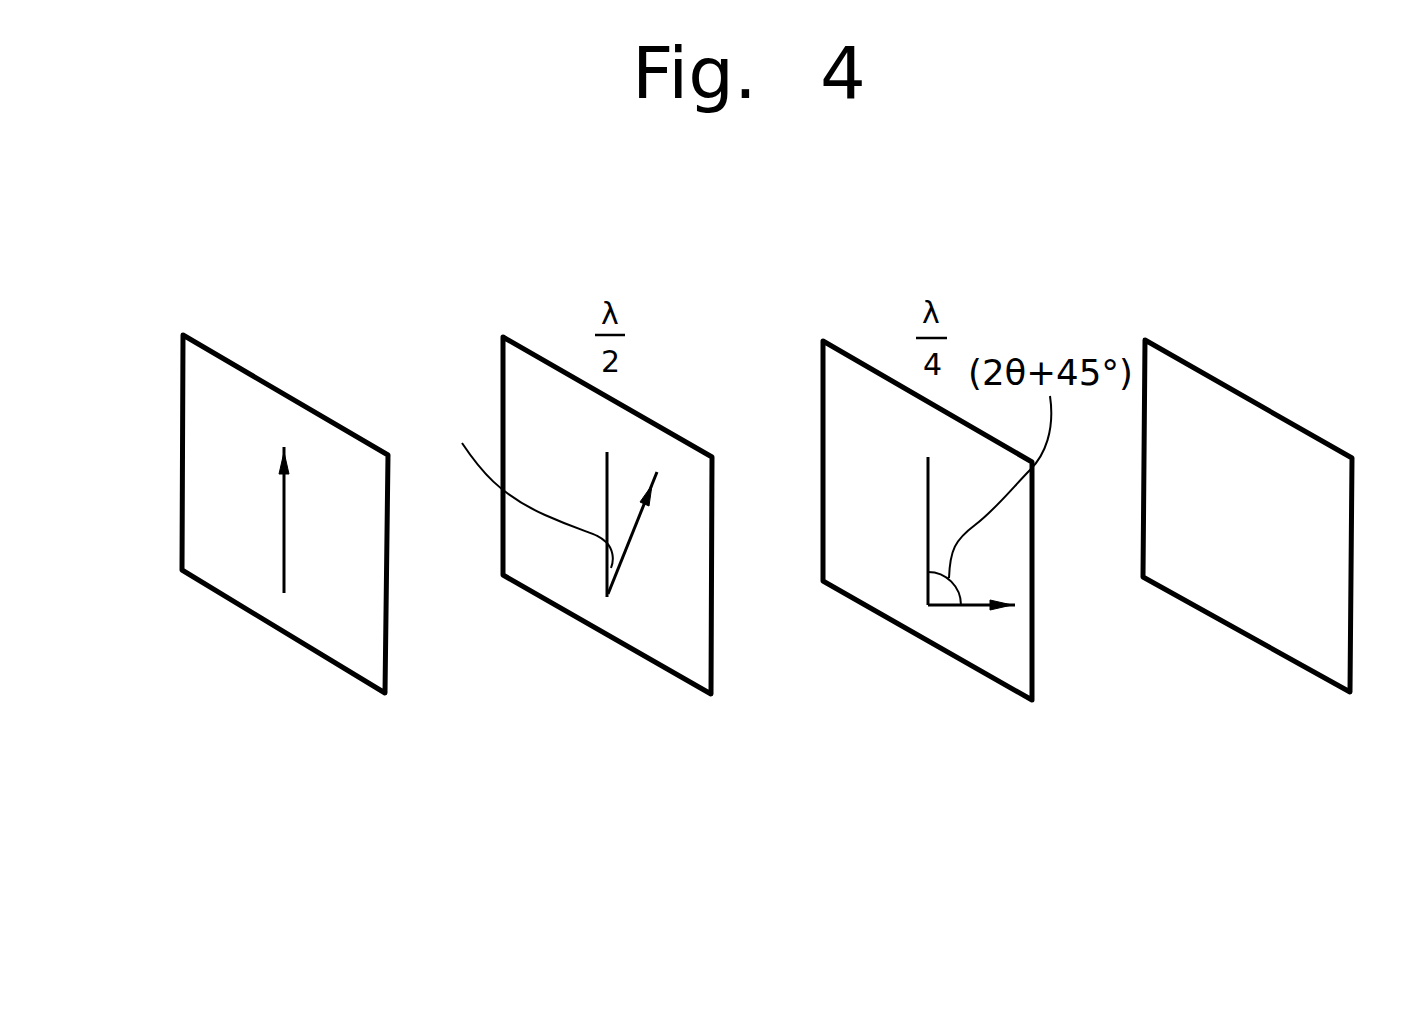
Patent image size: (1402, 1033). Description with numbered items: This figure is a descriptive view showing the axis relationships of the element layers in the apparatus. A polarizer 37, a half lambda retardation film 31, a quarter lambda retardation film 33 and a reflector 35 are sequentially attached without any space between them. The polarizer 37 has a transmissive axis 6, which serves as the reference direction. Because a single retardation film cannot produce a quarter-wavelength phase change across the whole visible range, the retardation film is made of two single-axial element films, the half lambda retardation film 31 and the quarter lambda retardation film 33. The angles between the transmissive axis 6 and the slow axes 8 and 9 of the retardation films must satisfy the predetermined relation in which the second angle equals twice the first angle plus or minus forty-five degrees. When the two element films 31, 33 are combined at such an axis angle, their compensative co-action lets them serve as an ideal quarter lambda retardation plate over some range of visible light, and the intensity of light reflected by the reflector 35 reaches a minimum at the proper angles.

The polarizer 37 is at (278, 630).
The transmissive axis 6 is at (285, 528).
The half lambda retardation film 31 is at (603, 640).
The slow axis 8 is at (622, 545).
The quarter lambda retardation film 33 is at (925, 645).
The slow axis 9 is at (975, 609).
The reflector 35 is at (1243, 636).